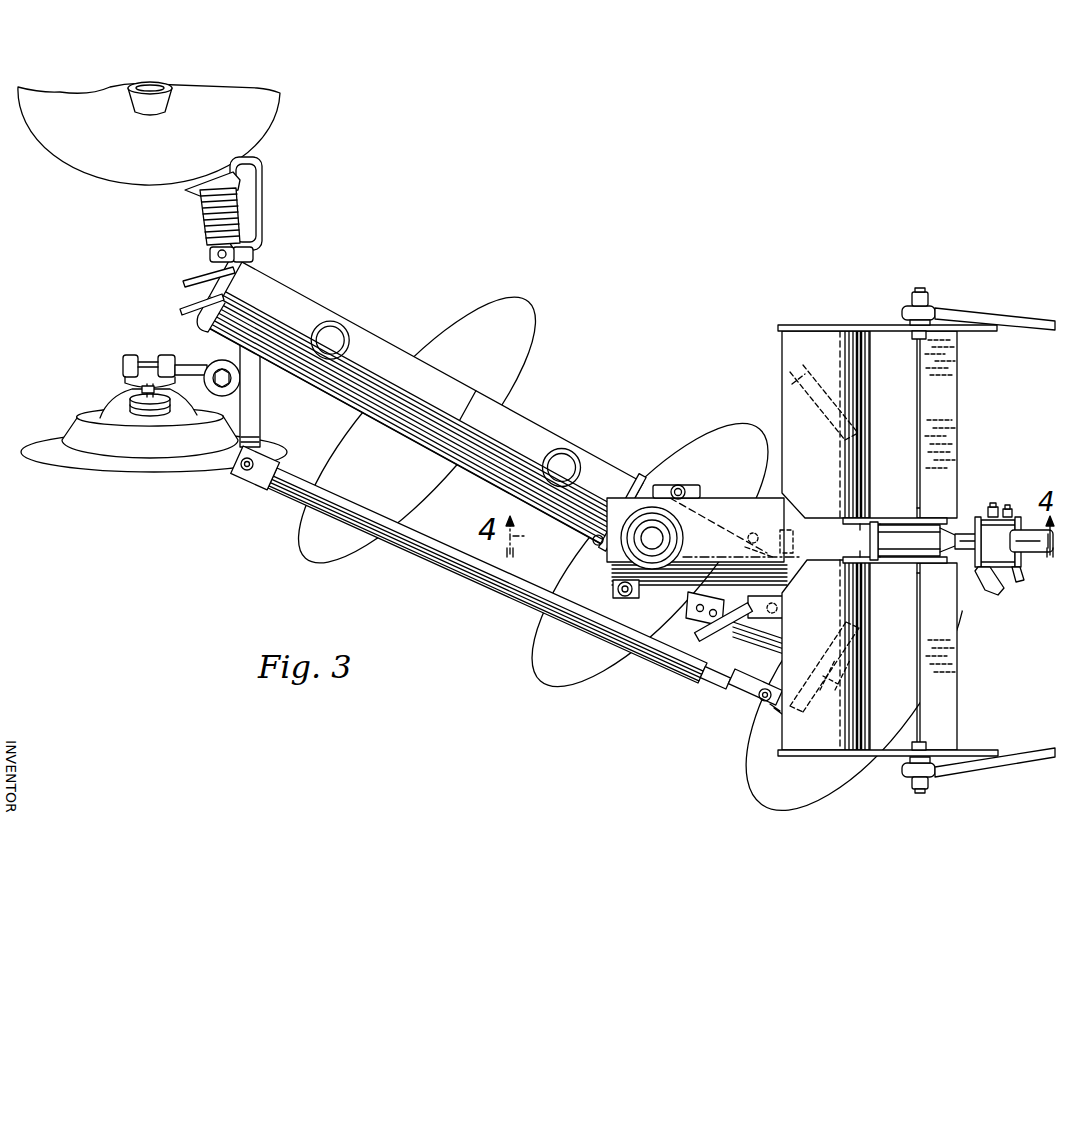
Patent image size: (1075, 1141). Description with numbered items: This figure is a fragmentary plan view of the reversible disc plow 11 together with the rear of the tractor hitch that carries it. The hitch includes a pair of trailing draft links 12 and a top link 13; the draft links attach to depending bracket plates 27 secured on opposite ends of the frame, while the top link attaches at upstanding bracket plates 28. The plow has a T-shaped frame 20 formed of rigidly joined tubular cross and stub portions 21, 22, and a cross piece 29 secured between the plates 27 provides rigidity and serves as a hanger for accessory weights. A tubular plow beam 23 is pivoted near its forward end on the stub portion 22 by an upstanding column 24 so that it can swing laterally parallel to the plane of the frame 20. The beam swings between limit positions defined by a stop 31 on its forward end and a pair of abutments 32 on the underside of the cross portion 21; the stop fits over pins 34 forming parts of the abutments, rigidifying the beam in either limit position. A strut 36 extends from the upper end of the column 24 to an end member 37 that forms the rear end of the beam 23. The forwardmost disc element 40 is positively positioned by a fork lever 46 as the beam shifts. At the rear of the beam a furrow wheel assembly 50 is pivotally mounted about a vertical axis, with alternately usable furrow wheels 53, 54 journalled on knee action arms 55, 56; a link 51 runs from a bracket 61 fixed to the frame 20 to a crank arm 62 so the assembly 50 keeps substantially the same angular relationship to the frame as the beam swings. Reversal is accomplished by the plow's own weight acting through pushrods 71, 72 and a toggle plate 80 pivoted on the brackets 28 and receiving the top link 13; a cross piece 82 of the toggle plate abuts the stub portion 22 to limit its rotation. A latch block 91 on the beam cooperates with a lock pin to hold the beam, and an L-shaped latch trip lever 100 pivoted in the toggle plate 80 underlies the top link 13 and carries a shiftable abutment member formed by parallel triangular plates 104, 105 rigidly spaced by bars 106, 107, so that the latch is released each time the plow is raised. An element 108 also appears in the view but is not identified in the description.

The reversible disc plow 11 is at (826, 326).
The trailing draft links 12 is at (1034, 322).
The top link 13 is at (1035, 553).
The T-shaped frame 20 is at (865, 513).
The cross portion 21 is at (794, 360).
The stub portion 22 is at (731, 500).
The plow beam 23 is at (527, 423).
The column 24 is at (664, 541).
The depending bracket plates 27 is at (987, 340).
The upstanding bracket plates 28 is at (893, 519).
The cross piece 29 is at (947, 427).
The stop 31 is at (858, 660).
The abutments 32 is at (812, 413).
The pins 34 is at (857, 424).
The strut 36 is at (354, 364).
The end member 37 is at (184, 306).
The forwardmost disc element 40 is at (322, 562).
The fork lever 46 is at (716, 641).
The furrow wheel assembly 50 is at (268, 182).
The link 51 is at (295, 502).
The furrow wheel 53 is at (72, 155).
The furrow wheel 54 is at (137, 467).
The knee action arm 55 is at (186, 189).
The knee action arm 56 is at (180, 364).
The bracket 61 is at (768, 712).
The crank arm 62 is at (261, 416).
The pushrod 71 is at (702, 484).
The pushrod 72 is at (664, 607).
The toggle plate 80 is at (908, 522).
The cross piece 82 is at (873, 539).
The latch block 91 is at (687, 630).
The latch trip lever 100 is at (928, 545).
The triangular plate 104 is at (1020, 582).
The triangular plate 105 is at (978, 517).
The bar 106 is at (992, 503).
The bar 107 is at (1008, 509).
The arm 108 is at (985, 592).